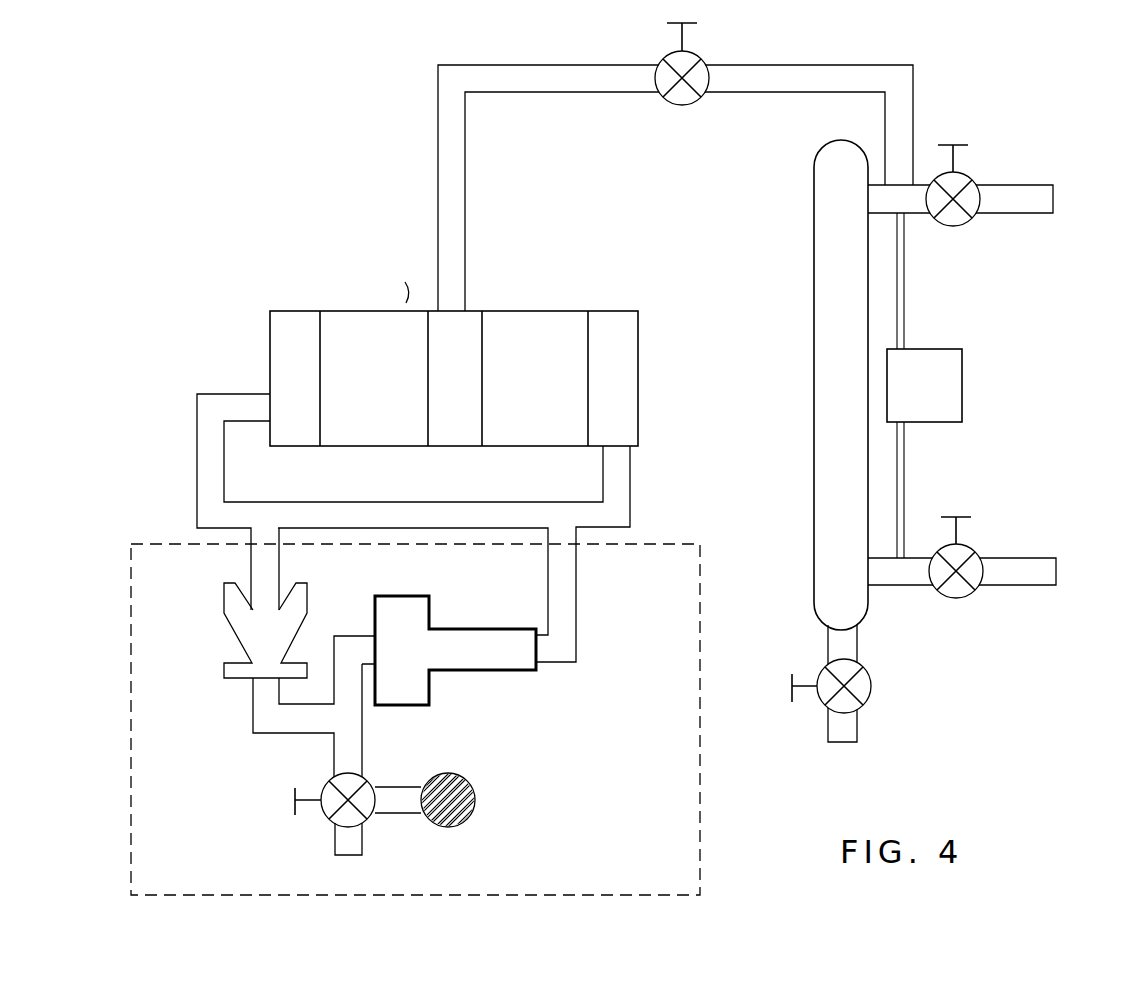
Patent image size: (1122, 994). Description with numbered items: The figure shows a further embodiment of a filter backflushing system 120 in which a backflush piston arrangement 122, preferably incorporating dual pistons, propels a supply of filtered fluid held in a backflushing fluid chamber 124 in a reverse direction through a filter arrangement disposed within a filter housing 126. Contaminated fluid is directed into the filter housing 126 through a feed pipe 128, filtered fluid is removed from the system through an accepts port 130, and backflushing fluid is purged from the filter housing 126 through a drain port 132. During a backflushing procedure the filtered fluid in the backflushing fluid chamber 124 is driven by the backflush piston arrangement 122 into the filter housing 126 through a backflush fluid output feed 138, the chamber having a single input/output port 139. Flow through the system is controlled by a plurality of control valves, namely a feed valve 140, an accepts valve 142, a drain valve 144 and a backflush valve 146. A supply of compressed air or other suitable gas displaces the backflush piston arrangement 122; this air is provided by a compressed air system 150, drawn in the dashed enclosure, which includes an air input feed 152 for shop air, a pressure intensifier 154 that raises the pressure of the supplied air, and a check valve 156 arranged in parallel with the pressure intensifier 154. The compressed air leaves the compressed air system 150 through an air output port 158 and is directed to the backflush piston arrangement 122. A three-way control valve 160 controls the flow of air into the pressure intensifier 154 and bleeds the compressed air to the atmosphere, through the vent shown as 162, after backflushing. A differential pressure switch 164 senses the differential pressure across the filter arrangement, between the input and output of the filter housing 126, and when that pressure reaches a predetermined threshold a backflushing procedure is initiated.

The filter backflushing system 120 is at (258, 141).
The backflush piston arrangement 122 is at (640, 322).
The backflushing fluid chamber 124 is at (348, 340).
The filter housing 126 is at (821, 373).
The feed pipe 128 is at (1041, 578).
The accepts port 130 is at (1038, 205).
The drain port 132 is at (851, 728).
The backflush fluid output feed 138 is at (578, 94).
The single input/output port 139 is at (466, 278).
The feed valve 140 is at (961, 598).
The accepts valve 142 is at (963, 222).
The drain valve 144 is at (846, 668).
The backflush valve 146 is at (703, 55).
The compressed air system 150 is at (131, 697).
The air input feed 152 is at (358, 836).
The pressure intensifier 154 is at (450, 628).
The check valve 156 is at (232, 630).
The air output port 158 is at (200, 435).
The three-way control valve 160 is at (322, 813).
The atmosphere vent 162 is at (472, 815).
The differential pressure switch 164 is at (958, 368).